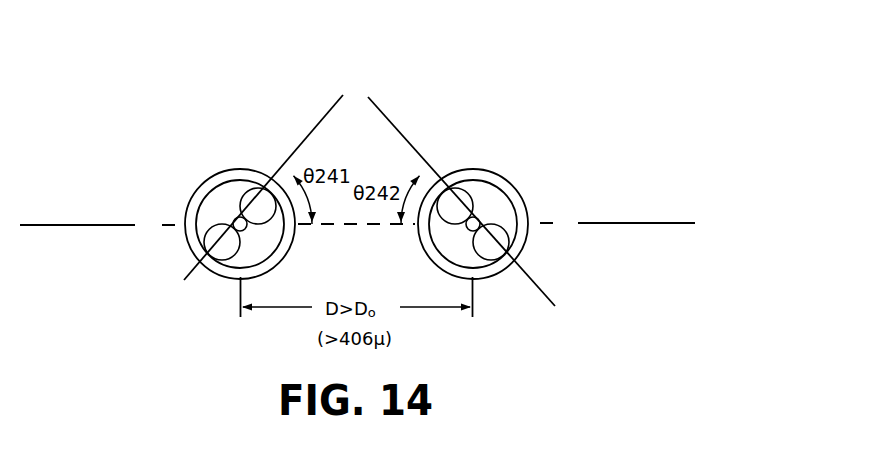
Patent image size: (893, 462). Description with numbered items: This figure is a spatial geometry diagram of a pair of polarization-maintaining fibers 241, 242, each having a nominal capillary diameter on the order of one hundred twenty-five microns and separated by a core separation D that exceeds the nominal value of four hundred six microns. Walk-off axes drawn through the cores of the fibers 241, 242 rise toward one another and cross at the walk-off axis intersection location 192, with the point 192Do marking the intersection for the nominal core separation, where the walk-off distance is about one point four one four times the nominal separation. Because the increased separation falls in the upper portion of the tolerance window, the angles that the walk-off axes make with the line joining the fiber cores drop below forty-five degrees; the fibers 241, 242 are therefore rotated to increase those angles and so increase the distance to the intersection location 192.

The walk-off axis intersection location 192 is at (358, 80).
The nominal walk-off location 192Do is at (361, 110).
The PM fiber 241 is at (193, 190).
The PM fiber 242 is at (512, 183).